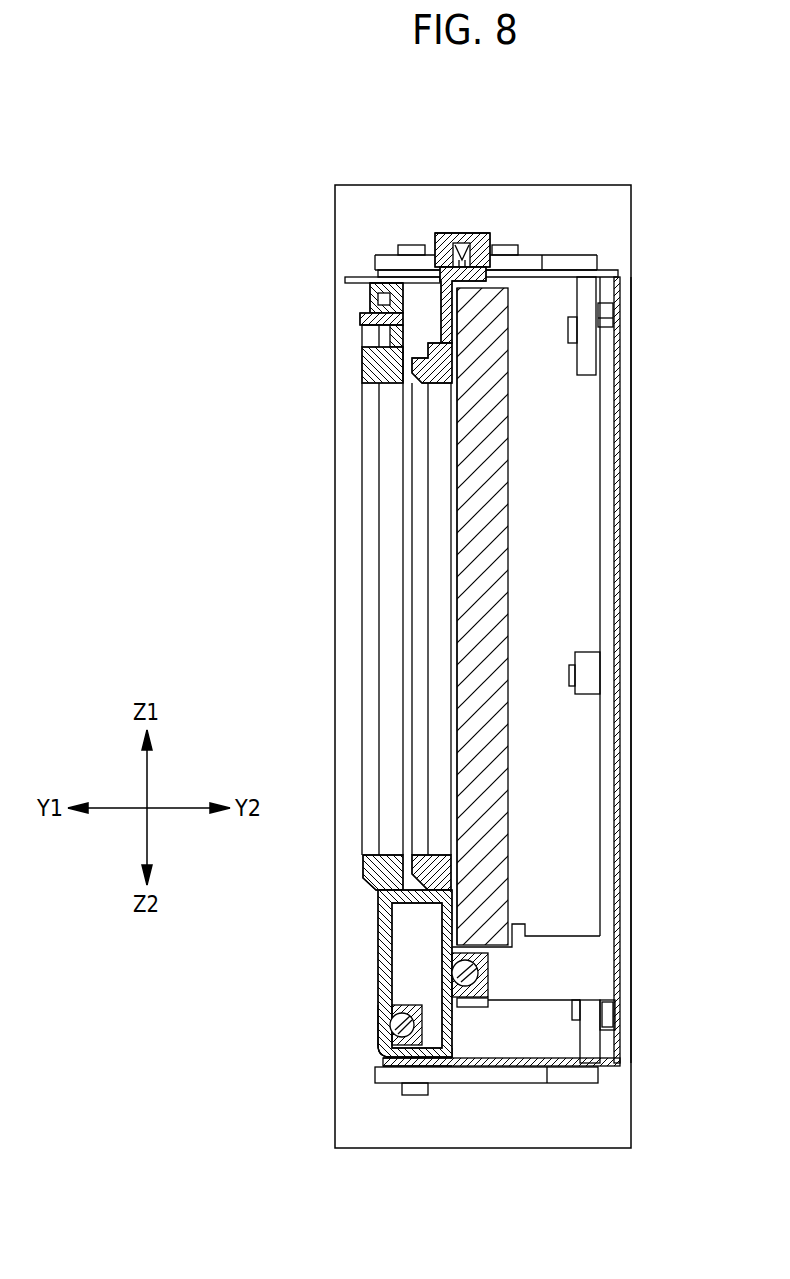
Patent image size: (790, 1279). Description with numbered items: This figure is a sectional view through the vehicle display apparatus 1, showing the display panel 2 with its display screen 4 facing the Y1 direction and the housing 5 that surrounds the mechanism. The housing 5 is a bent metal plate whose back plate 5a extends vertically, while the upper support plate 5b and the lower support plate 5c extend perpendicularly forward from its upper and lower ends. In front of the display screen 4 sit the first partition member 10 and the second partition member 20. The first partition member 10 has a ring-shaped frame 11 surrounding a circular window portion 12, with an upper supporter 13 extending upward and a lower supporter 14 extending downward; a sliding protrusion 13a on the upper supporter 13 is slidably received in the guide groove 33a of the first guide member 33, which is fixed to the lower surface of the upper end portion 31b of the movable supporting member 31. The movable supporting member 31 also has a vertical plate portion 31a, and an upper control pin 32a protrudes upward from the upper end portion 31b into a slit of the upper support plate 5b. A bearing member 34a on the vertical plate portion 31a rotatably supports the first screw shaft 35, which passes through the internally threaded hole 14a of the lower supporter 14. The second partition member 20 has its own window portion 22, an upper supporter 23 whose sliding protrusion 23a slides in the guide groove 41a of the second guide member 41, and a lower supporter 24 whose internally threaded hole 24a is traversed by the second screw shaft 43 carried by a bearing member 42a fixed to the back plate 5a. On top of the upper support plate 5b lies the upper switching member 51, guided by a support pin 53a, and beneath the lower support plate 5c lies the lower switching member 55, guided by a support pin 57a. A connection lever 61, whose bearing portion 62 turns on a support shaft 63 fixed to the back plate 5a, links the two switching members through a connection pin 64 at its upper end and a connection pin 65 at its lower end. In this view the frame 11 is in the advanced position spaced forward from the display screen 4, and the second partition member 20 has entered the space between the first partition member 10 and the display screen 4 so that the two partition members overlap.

The vehicle display apparatus 1 is at (663, 182).
The display panel 2 is at (519, 584).
The display screen 4 is at (457, 708).
The housing 5 is at (642, 860).
The back plate 5a is at (621, 751).
The upper support plate 5b is at (568, 272).
The lower support plate 5c is at (523, 1067).
The first partition member 10 is at (346, 449).
The frame 11 is at (372, 376).
The window portion 12 is at (370, 637).
The upper supporter 13 is at (363, 360).
The sliding protrusion 13a is at (362, 318).
The lower supporter 14 is at (378, 948).
The internally threaded hole 14a is at (385, 1062).
The second partition member 20 is at (405, 548).
The window portion 22 is at (420, 502).
The upper supporter 23 is at (452, 316).
The sliding protrusion 23a is at (441, 233).
The lower supporter 24 is at (455, 918).
The internally threaded hole 24a is at (489, 1000).
The movable supporting member 31 is at (468, 1066).
The vertical plate portion 31a is at (470, 1060).
The upper end portion 31b is at (345, 280).
The upper control pin 32a is at (407, 246).
The first guide member 33 is at (372, 298).
The guide groove 33a is at (372, 283).
The bearing member 34a is at (382, 1030).
The first screw shaft 35 is at (398, 1020).
The second guide member 41 is at (467, 184).
The guide groove 41a is at (458, 233).
The bearing member 42a is at (603, 965).
The second screw shaft 43 is at (460, 990).
The upper switching member 51 is at (530, 260).
The support pin 53a is at (500, 245).
The lower switching member 55 is at (585, 1073).
The support pin 57a is at (413, 1092).
The connection lever 61 is at (609, 560).
The bearing portion 62 is at (591, 679).
The support shaft 63 is at (570, 672).
The connection pin 64 is at (577, 332).
The connection pin 65 is at (578, 1007).